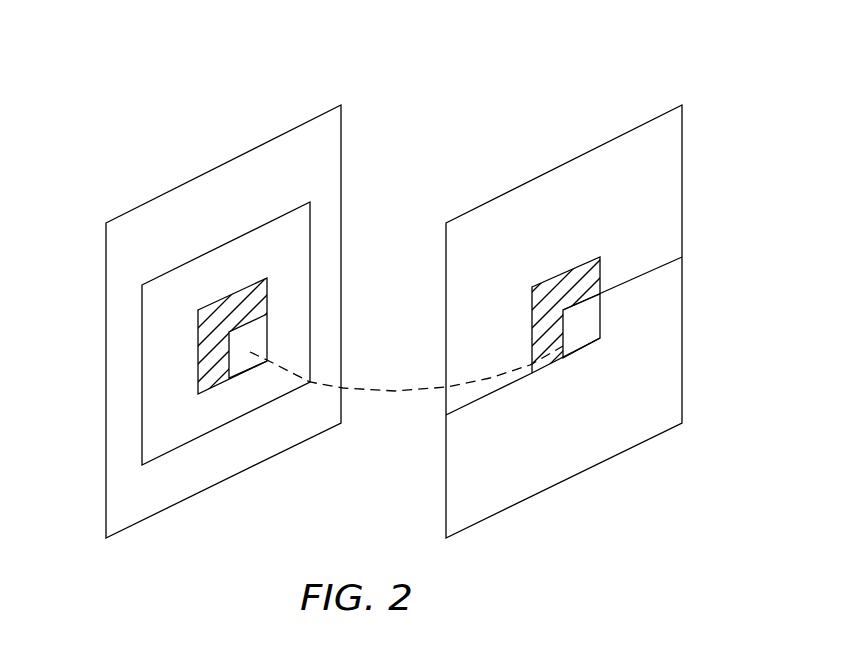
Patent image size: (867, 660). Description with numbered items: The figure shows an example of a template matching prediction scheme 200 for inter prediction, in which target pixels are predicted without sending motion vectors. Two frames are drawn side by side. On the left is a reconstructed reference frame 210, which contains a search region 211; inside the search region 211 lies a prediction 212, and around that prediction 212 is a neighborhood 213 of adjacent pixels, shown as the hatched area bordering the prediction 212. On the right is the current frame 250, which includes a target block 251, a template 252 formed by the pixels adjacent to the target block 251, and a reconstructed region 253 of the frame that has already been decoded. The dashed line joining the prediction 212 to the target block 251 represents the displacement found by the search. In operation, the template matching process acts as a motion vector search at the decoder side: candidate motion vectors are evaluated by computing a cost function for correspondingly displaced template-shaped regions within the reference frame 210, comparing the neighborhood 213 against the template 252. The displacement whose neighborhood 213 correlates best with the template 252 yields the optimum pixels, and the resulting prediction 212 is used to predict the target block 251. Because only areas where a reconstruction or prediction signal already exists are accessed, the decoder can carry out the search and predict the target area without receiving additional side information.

The template matching prediction scheme 200 is at (452, 88).
The reconstructed reference frame 210 is at (251, 483).
The search region 211 is at (278, 242).
The prediction 212 is at (230, 354).
The neighborhood 213 is at (235, 305).
The current frame 250 is at (591, 480).
The target block 251 is at (600, 330).
The template 252 is at (545, 308).
The reconstructed region 253 is at (601, 187).